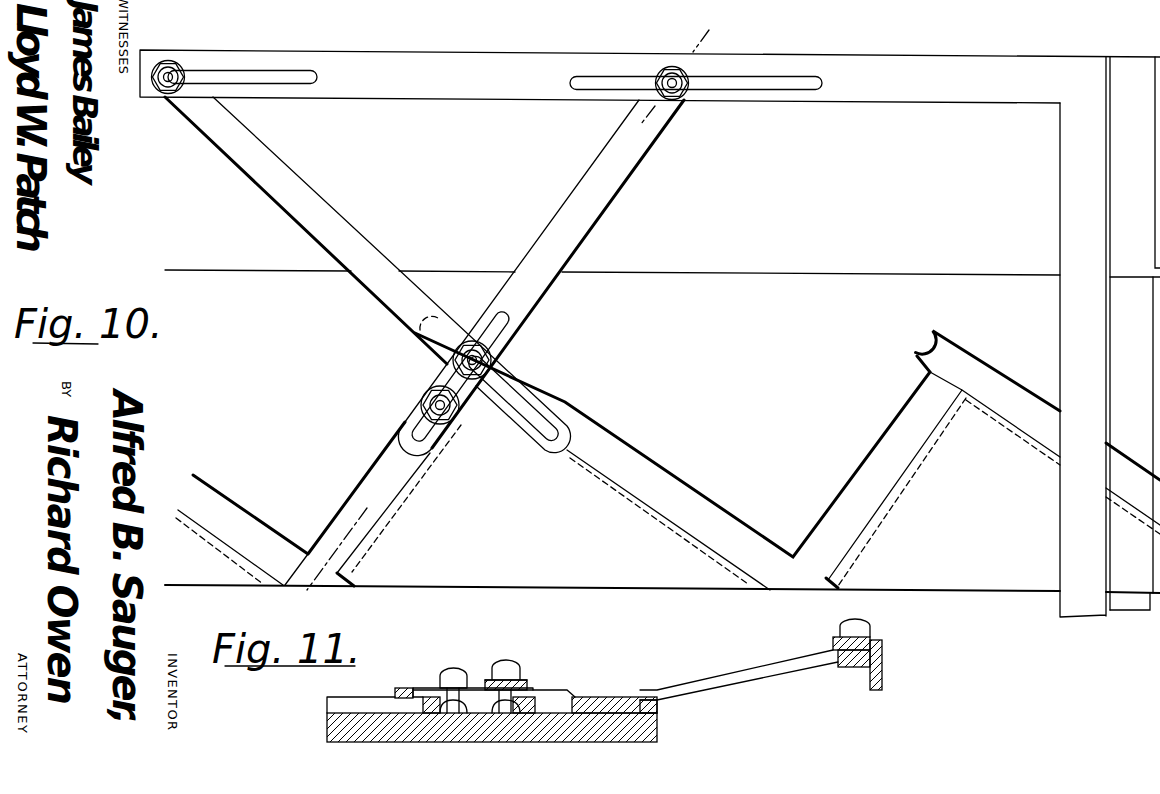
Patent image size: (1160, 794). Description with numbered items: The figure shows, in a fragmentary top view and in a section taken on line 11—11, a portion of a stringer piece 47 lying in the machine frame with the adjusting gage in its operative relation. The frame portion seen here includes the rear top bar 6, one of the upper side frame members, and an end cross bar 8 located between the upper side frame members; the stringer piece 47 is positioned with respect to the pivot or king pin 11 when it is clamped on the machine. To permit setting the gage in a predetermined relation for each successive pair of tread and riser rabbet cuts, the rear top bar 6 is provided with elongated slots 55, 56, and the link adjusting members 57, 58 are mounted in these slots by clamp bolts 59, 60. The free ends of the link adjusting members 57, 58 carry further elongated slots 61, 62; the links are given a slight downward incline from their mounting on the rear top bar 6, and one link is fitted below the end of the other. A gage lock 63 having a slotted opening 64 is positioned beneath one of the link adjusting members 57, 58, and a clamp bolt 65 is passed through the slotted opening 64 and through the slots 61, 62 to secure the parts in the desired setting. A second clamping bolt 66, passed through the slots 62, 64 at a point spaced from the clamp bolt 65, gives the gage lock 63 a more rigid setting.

In FIG. 10, the rear top bar 6 is at (924, 74).
In FIG. 11, the rear top bar 6 is at (882, 677).
In FIG. 10, the end cross bar 8 is at (1090, 90).
In FIG. 10, the pivot or king pin 11 is at (722, 29).
In FIG. 10, the stringer piece 47 is at (1013, 575).
In FIG. 10, the elongated slot 55 is at (277, 72).
In FIG. 10, the elongated slot 56 is at (776, 82).
In FIG. 11, the elongated slot 56 is at (833, 646).
In FIG. 10, the link adjusting member 57 is at (330, 217).
In FIG. 11, the link adjusting member 57 is at (527, 684).
In FIG. 10, the link adjusting member 58 is at (572, 234).
In FIG. 11, the link adjusting member 58 is at (783, 668).
In FIG. 10, the clamp bolt 59 is at (177, 72).
In FIG. 10, the clamp bolt 60 is at (668, 72).
In FIG. 11, the clamp bolt 60 is at (860, 638).
In FIG. 10, the elongated slot 61 is at (520, 400).
In FIG. 10, the elongated slot 62 is at (502, 330).
In FIG. 11, the elongated slot 62 is at (568, 691).
In FIG. 11, the gage lock 63 is at (420, 707).
In FIG. 11, the slotted opening 64 is at (475, 688).
In FIG. 10, the clamp bolt 65 is at (462, 362).
In FIG. 11, the clamp bolt 65 is at (550, 698).
In FIG. 10, the second clamping bolt 66 is at (430, 405).
In FIG. 11, the second clamping bolt 66 is at (432, 690).